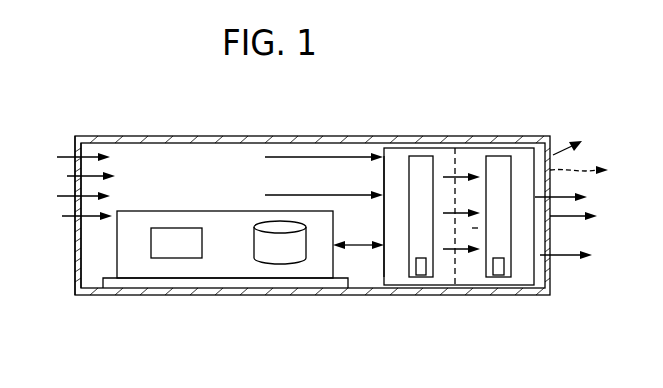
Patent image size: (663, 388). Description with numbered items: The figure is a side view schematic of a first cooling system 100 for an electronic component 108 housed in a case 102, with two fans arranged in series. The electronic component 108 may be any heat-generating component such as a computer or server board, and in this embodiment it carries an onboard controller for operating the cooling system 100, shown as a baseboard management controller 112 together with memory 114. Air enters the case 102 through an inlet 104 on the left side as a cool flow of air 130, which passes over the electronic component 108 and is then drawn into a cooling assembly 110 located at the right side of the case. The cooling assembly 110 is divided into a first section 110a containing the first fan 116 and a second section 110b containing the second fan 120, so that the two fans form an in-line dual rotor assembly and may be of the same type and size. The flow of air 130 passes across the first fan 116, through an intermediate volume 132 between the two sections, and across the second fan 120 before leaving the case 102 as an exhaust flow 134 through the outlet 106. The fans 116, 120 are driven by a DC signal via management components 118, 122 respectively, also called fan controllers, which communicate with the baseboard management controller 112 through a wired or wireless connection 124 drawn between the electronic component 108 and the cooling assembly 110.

The cooling system 100 is at (455, 86).
The case 102 is at (203, 137).
The inlet 104 is at (74, 228).
The outlet 106 is at (550, 184).
The electronic component 108 is at (219, 294).
The cooling assembly 110 is at (493, 296).
The first section 110a is at (438, 278).
The second section 110b is at (522, 275).
The baseboard management controller 112 is at (190, 253).
The memory 114 is at (294, 255).
The first fan 116 is at (408, 177).
The management component 118 is at (421, 276).
The second fan 120 is at (512, 255).
The management component 122 is at (499, 276).
The wired or wireless connection 124 is at (358, 248).
The flow of air 130 is at (198, 185).
The intermediate volume 132 is at (472, 228).
The exhaust flow 134 is at (556, 152).